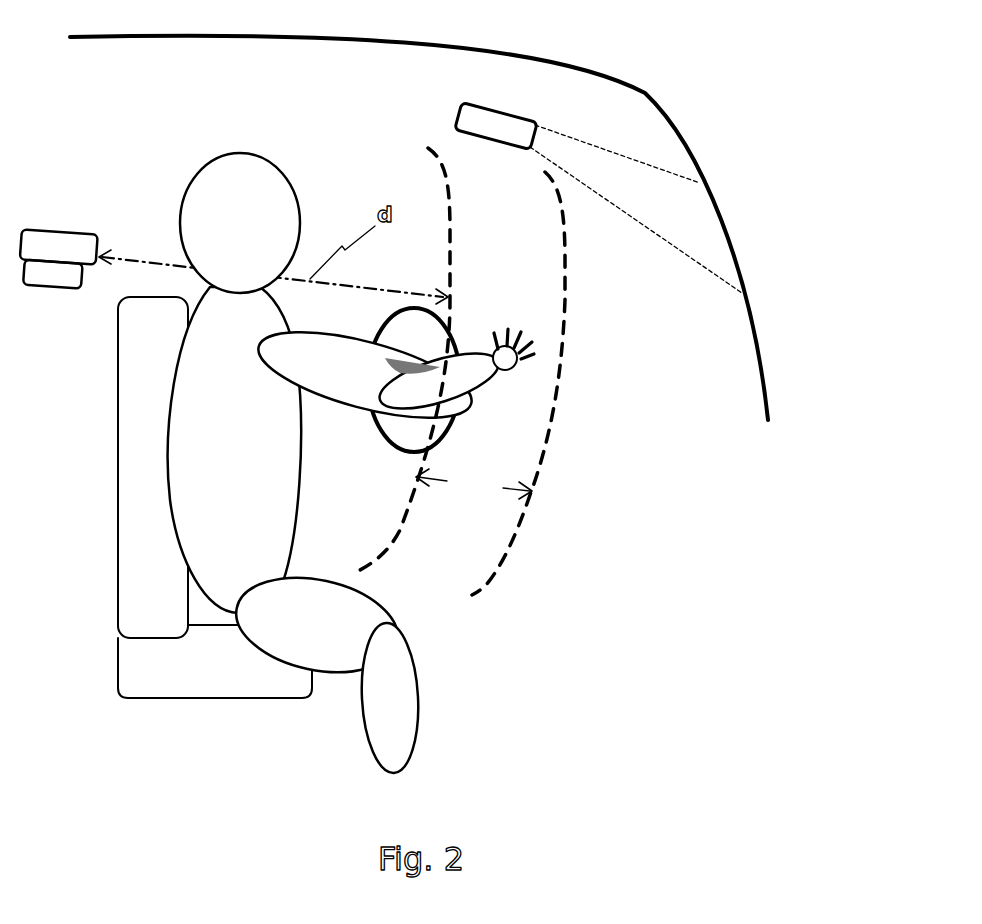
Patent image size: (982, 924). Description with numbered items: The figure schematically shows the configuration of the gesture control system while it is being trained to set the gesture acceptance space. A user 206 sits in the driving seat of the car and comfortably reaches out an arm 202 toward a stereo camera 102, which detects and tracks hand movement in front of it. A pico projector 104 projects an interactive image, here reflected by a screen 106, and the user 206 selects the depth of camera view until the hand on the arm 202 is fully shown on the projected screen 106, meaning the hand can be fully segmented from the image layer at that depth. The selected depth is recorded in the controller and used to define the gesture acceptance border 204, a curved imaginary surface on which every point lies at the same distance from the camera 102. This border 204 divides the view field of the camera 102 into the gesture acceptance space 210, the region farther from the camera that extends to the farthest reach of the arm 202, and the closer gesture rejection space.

The stereo camera 102 is at (75, 216).
The pico projector 104 is at (598, 152).
The screen 106 is at (439, 228).
The arm 202 is at (560, 383).
The gesture acceptance border 204 is at (439, 346).
The user 206 is at (172, 497).
The gesture acceptance space 210 is at (474, 484).